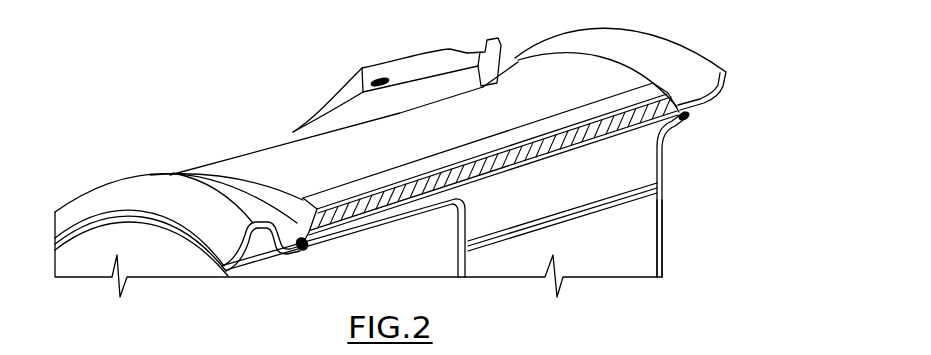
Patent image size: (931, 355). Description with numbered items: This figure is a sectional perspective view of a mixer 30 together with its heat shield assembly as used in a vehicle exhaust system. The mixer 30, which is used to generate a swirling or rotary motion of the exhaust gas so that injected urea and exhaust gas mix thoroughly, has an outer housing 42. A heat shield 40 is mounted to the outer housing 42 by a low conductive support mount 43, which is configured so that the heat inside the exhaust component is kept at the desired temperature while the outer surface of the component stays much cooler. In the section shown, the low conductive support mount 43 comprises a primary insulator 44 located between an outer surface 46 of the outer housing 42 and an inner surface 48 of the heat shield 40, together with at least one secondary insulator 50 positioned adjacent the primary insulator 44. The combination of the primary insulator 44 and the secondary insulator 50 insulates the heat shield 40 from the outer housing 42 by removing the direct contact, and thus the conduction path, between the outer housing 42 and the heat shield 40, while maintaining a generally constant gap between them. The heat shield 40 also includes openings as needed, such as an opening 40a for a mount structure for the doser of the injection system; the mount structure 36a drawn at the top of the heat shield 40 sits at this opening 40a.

The mixer 30 is at (757, 83).
The bracket 36a is at (437, 70).
The heat shield 40 is at (282, 167).
The opening 40a is at (481, 63).
The outer housing 42 is at (679, 96).
The low conductive support mount 43 is at (689, 138).
The primary insulator 44 is at (622, 128).
The outer surface 46 is at (560, 152).
The inner surface 48 is at (560, 136).
The secondary insulator 50 is at (304, 238).